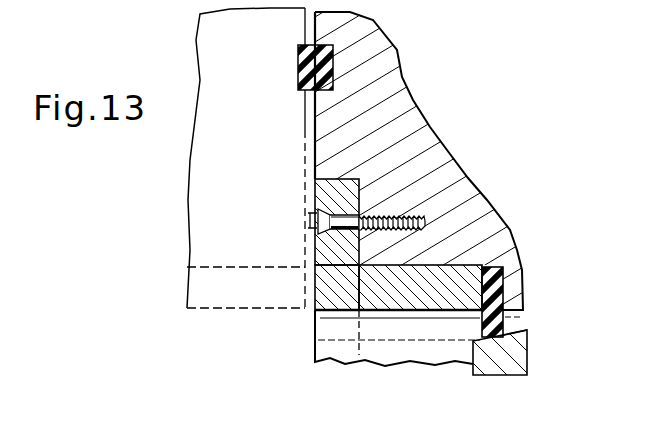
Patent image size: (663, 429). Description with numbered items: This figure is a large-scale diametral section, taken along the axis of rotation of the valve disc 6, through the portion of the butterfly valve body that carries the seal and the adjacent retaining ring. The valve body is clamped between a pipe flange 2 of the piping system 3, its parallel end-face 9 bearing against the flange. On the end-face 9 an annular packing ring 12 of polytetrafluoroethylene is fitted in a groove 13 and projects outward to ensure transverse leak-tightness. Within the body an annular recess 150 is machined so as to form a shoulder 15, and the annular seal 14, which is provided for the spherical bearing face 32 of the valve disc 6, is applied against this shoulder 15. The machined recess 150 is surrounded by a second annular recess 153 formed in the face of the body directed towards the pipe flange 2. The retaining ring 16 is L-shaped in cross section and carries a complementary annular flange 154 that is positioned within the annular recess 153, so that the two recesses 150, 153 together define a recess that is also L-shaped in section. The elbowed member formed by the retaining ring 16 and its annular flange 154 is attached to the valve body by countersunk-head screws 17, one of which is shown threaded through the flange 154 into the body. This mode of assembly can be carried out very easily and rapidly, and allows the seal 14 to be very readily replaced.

The pipe flange 2 is at (220, 171).
The piping system 3 is at (215, 312).
The valve disc 6 is at (486, 364).
The end-face 9 is at (313, 30).
The annular packing ring 12 is at (298, 62).
The groove 13 is at (317, 97).
The annular seal 14 is at (480, 320).
The shoulder 15 is at (501, 267).
The retaining ring 16 is at (315, 317).
The countersunk-head screw 17 is at (317, 213).
The spherical bearing face 32 is at (505, 346).
The annular recess 150 is at (450, 265).
The second annular recess 153 is at (362, 193).
The annular flange 154 is at (317, 260).